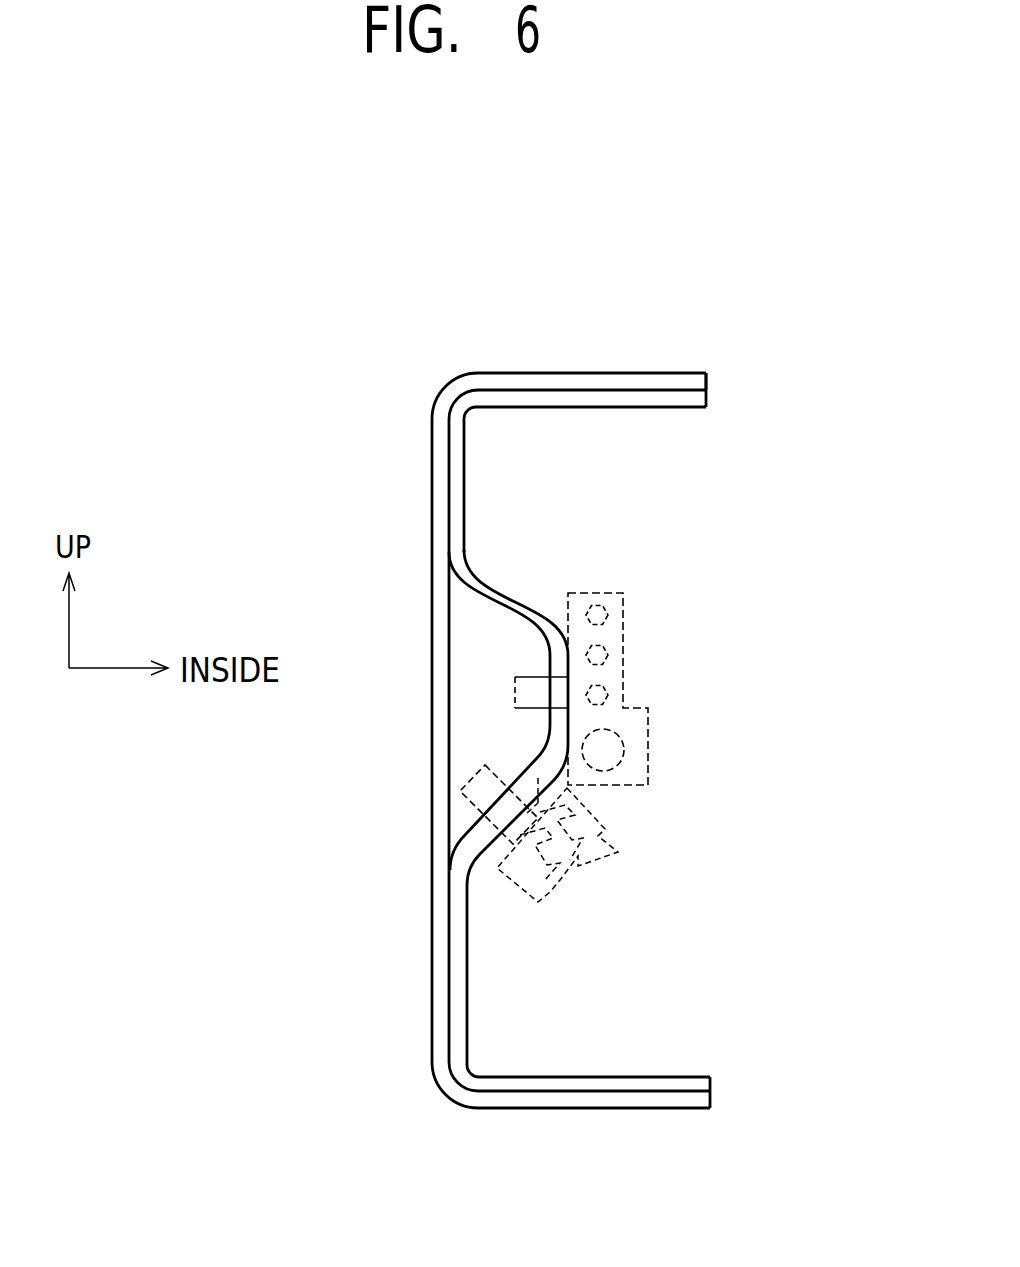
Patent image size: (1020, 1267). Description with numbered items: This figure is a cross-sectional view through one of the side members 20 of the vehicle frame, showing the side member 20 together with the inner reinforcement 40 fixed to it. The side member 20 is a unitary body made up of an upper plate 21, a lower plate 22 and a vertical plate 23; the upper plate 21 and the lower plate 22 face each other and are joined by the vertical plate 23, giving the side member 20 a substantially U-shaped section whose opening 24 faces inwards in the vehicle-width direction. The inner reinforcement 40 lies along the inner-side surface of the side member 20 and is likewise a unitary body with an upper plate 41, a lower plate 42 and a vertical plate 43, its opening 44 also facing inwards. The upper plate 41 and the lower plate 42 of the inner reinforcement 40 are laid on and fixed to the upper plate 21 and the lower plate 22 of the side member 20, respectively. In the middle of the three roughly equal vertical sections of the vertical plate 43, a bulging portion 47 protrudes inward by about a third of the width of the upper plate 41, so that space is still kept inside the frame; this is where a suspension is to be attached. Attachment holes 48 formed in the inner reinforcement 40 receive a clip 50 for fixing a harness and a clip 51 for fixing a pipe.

The side member 20 is at (566, 738).
The upper plate 21 is at (545, 379).
The lower plate 22 is at (533, 1102).
The vertical plate 23 is at (438, 471).
The opening 24 is at (707, 382).
The inner reinforcement 40 is at (603, 740).
The upper plate 41 is at (663, 397).
The lower plate 42 is at (652, 1080).
The vertical plate 43 is at (461, 509).
The opening 44 is at (707, 400).
The bulging portion 47 is at (548, 627).
The attachment hole 48 is at (565, 708).
The clip 50 is at (606, 831).
The clip 51 is at (642, 754).